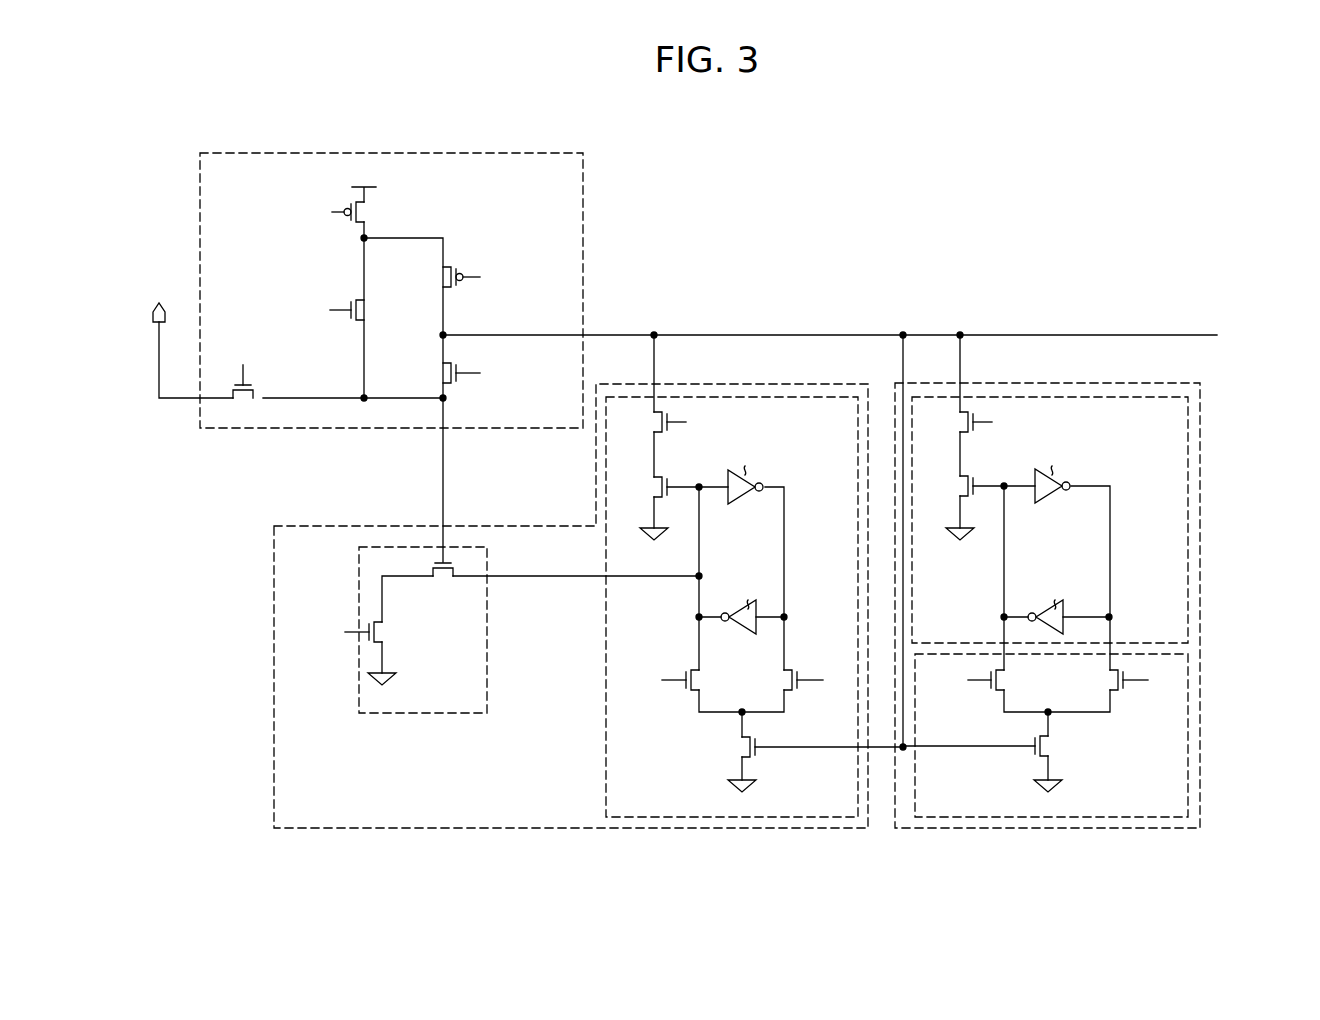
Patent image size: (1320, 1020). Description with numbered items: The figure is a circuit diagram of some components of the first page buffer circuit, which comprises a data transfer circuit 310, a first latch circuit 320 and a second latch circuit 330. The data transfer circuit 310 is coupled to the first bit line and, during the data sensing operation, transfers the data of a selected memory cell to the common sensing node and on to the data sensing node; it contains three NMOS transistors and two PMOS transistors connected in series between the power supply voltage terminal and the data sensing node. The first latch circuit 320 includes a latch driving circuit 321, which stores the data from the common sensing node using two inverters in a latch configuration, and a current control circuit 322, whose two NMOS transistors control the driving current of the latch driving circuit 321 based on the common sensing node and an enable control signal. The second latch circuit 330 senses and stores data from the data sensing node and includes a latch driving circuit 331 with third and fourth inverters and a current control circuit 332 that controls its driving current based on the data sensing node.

The data transfer circuit 310 is at (583, 187).
The first latch circuit 320 is at (596, 465).
The latch driving circuit 321 is at (606, 662).
The current control circuit 322 is at (487, 552).
The second latch circuit 330 is at (1200, 447).
The latch driving circuit 331 is at (1188, 572).
The current control circuit 332 is at (1188, 738).